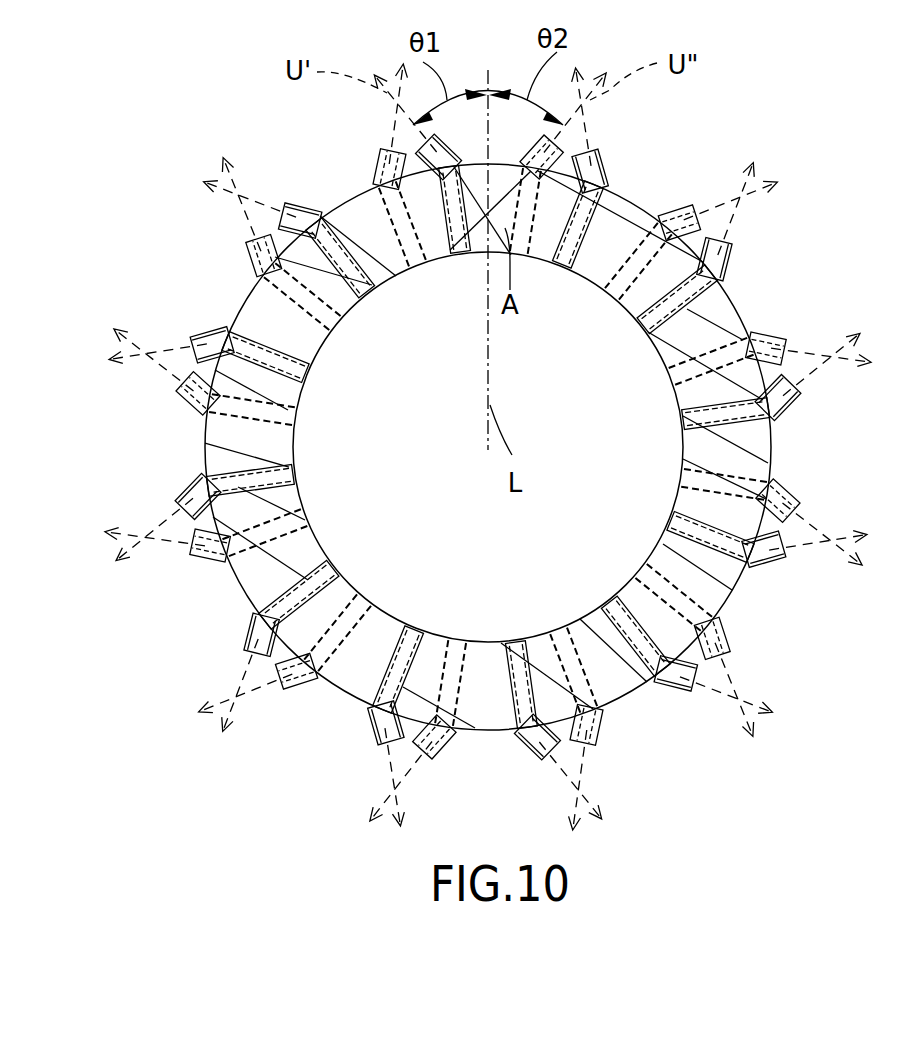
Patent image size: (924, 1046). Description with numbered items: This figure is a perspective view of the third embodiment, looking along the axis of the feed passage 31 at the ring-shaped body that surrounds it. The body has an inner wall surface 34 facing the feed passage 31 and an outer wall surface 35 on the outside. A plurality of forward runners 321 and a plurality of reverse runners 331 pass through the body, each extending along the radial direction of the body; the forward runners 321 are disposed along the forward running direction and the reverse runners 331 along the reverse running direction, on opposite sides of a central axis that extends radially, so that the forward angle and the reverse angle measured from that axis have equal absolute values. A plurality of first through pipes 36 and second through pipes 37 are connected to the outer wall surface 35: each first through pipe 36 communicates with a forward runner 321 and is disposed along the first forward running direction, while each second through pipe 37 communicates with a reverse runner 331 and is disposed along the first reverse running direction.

The feed passage 31 is at (345, 440).
The inner wall surface 34 is at (648, 358).
The outer wall surface 35 is at (748, 306).
The first through pipe 36 is at (610, 170).
The second through pipe 37 is at (372, 162).
The forward runner 321 is at (450, 216).
The reverse runner 331 is at (533, 224).